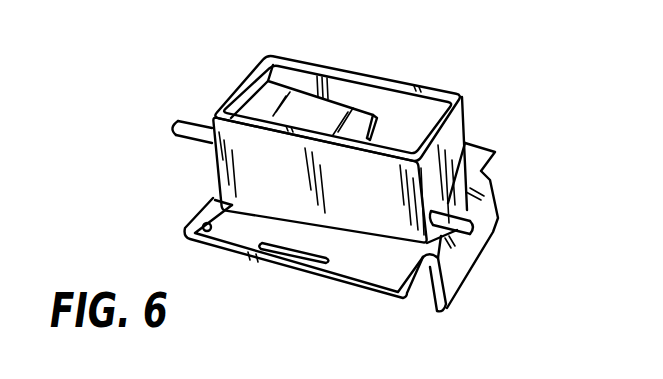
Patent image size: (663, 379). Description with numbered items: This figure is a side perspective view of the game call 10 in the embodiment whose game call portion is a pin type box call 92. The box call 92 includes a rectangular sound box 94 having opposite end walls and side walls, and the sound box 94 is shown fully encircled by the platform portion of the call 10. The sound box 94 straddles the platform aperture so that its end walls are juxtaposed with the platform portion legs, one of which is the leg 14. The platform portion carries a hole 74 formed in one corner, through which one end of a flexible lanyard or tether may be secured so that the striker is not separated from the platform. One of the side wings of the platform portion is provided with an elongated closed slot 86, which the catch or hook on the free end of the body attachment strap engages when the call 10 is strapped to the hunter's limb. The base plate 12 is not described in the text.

The game call 10 is at (507, 173).
The base plate 12 is at (355, 287).
The platform portion leg 14 is at (467, 247).
The hole 74 is at (200, 227).
The elongated closed slot 86 is at (266, 252).
The pin type box call 92 is at (388, 78).
The rectangular sound box 94 is at (238, 92).